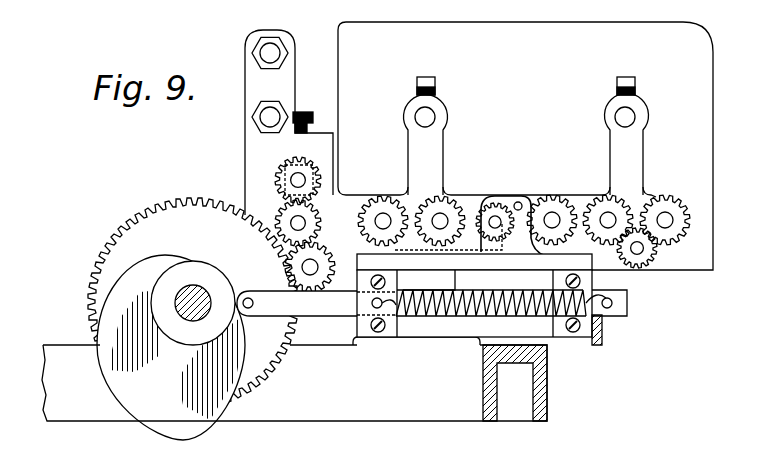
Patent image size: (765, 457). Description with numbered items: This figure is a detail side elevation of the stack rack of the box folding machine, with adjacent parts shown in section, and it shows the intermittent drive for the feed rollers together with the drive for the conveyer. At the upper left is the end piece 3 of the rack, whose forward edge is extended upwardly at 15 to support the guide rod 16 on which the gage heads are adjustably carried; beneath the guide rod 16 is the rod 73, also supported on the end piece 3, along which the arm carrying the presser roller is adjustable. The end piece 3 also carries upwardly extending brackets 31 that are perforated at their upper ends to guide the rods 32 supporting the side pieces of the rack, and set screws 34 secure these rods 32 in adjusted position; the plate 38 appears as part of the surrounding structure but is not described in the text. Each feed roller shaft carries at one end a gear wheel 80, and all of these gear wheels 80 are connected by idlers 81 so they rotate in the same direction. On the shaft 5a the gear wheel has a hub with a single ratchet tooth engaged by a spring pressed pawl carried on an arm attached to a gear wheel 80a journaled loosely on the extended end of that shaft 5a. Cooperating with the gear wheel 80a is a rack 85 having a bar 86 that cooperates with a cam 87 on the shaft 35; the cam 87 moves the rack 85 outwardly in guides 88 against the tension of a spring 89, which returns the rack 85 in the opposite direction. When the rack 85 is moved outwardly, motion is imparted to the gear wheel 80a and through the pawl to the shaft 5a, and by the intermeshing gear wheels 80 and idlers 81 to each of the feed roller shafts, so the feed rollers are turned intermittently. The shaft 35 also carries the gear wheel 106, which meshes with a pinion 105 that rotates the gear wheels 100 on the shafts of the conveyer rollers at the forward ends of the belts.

The end piece 3 is at (294, 373).
The shaft 5a is at (483, 212).
The upward extension 15 is at (287, 176).
The guide rod 16 is at (270, 53).
The bracket 31 is at (430, 160).
The rod 32 is at (425, 117).
The set screw 34 is at (428, 80).
The shaft 35 is at (193, 303).
The plate 38 is at (525, 146).
The rod 73 is at (270, 117).
The gear wheel 80 is at (562, 200).
The gear wheel 80a is at (527, 193).
The idler 81 is at (643, 266).
The rack 85 is at (438, 247).
The bar 86 is at (297, 304).
The cam 87 is at (182, 391).
The guides 88 is at (393, 328).
The spring 89 is at (530, 317).
The gear wheel 100 is at (313, 193).
The pinion 105 is at (318, 255).
The gear wheel 106 is at (193, 303).